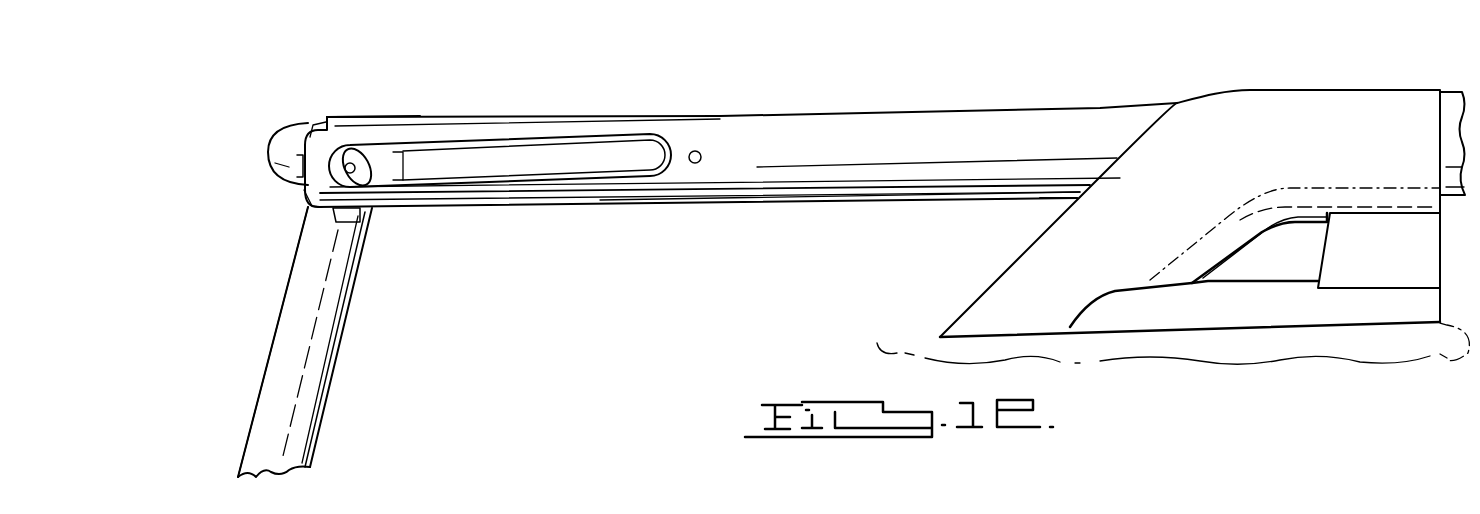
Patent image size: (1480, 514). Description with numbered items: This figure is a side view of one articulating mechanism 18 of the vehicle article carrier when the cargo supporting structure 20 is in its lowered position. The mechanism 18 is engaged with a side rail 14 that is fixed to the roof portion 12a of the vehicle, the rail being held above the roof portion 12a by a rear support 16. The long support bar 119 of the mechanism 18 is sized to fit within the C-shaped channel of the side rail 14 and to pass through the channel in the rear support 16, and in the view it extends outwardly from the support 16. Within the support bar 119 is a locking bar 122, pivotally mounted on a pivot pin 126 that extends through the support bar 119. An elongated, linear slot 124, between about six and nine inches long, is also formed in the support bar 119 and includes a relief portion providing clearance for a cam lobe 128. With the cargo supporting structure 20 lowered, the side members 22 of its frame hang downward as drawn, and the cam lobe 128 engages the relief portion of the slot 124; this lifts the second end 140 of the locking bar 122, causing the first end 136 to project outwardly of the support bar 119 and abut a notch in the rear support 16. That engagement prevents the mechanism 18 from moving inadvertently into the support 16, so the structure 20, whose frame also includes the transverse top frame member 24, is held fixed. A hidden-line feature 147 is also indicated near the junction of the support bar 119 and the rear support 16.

The roof portion 12a is at (898, 345).
The side rail 14 is at (1451, 91).
The rear support 16 is at (1219, 91).
The articulating mechanism 18 is at (812, 90).
The cargo supporting structure 20 is at (295, 266).
The side member 22 is at (285, 345).
The top frame member 24 is at (290, 139).
The support bar 119 is at (875, 128).
The locking bar 122 is at (1002, 195).
The slot 124 is at (550, 157).
The pivot pin 126 is at (696, 150).
The cam lobe 128 is at (357, 157).
The first end 136 is at (1057, 193).
The second end 140 is at (362, 120).
The hidden guide line 147 is at (1085, 190).